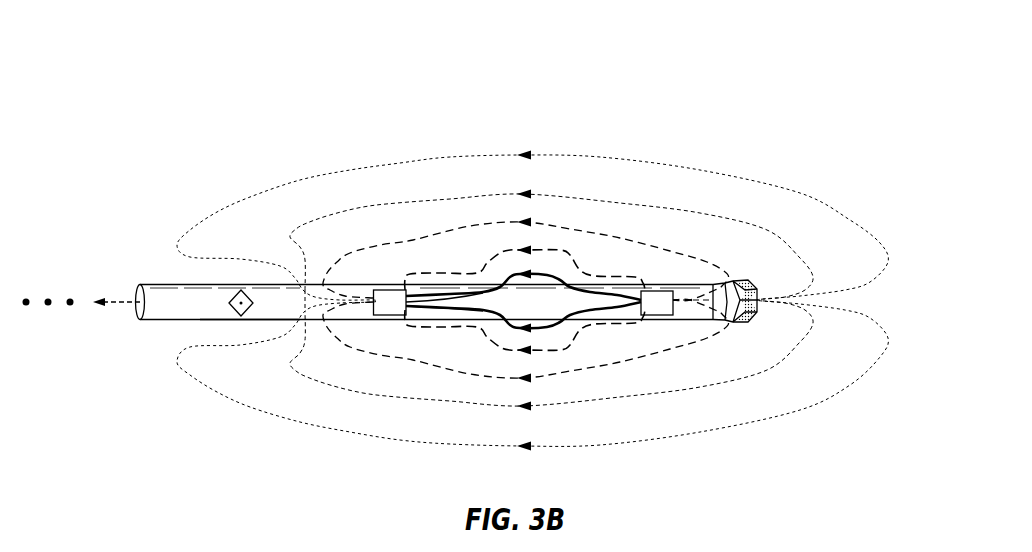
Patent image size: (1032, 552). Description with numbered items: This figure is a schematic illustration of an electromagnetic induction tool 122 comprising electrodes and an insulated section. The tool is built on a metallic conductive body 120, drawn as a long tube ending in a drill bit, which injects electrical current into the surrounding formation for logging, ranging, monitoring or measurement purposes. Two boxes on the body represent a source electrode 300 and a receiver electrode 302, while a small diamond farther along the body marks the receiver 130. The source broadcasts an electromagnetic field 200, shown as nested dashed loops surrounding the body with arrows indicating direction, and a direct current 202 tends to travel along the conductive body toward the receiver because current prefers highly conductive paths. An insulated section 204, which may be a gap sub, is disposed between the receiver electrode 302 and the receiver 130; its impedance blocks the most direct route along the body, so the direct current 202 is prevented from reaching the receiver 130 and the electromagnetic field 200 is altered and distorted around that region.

The electromagnetic induction tool 122 is at (838, 70).
The conductive body 120 is at (155, 291).
The receiver 130 is at (243, 289).
The insulated section 204 is at (280, 322).
The receiver electrode 302 is at (394, 316).
The source electrode 300 is at (654, 290).
The electromagnetic field 200 is at (788, 188).
The direct current 202 is at (326, 332).